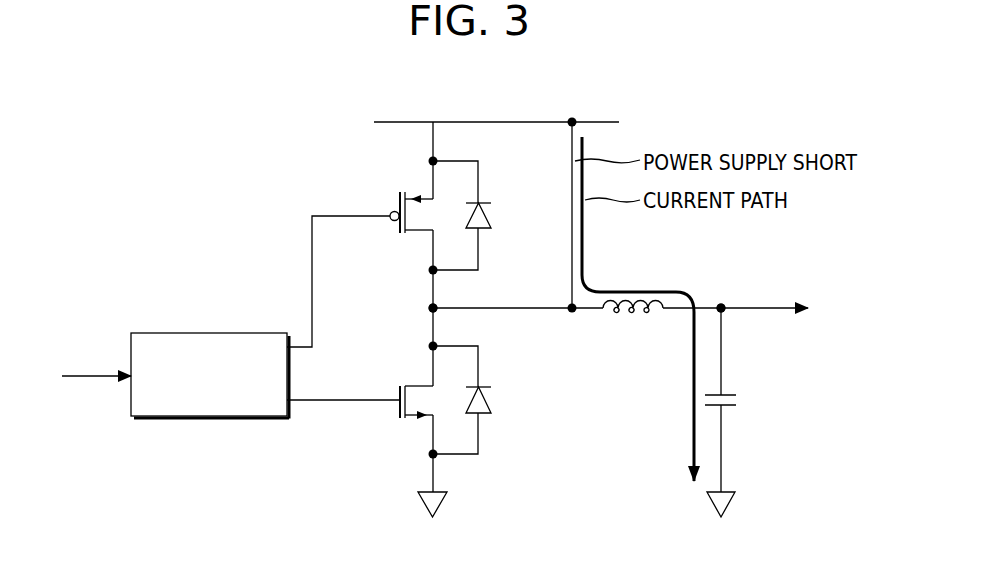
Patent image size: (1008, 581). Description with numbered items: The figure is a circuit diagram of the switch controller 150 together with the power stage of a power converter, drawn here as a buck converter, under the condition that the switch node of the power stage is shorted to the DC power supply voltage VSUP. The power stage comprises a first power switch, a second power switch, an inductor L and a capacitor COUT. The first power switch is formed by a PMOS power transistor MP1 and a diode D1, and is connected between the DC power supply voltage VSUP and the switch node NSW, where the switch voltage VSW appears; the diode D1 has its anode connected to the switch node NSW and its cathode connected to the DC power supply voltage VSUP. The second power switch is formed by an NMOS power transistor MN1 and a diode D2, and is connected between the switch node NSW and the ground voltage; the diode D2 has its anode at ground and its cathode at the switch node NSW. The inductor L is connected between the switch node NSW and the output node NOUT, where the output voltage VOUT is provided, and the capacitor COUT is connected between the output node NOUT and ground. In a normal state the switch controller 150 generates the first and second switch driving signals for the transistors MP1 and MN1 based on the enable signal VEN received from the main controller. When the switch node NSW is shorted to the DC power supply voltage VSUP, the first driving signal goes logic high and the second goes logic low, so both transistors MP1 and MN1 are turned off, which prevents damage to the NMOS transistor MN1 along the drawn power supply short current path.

The switch controller 150 is at (208, 333).
The PMOS power transistor MP1 is at (410, 227).
The NMOS power transistor MN1 is at (410, 418).
The diode D1 is at (476, 215).
The diode D2 is at (476, 400).
The inductor L is at (633, 320).
The capacitor COUT is at (748, 400).
The DC power supply voltage VSUP is at (496, 107).
The switch voltage VSW is at (518, 294).
The switch node NSW is at (428, 308).
The output node NOUT is at (721, 300).
The output voltage VOUT is at (764, 309).
The enable signal VEN is at (96, 360).